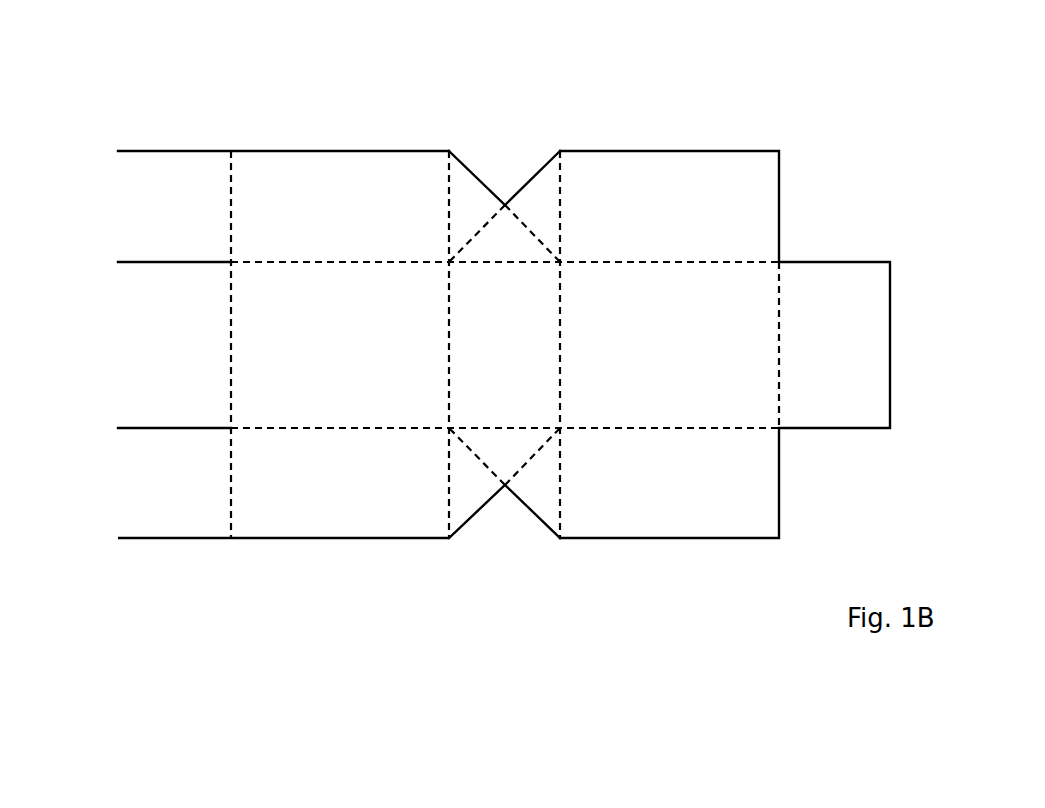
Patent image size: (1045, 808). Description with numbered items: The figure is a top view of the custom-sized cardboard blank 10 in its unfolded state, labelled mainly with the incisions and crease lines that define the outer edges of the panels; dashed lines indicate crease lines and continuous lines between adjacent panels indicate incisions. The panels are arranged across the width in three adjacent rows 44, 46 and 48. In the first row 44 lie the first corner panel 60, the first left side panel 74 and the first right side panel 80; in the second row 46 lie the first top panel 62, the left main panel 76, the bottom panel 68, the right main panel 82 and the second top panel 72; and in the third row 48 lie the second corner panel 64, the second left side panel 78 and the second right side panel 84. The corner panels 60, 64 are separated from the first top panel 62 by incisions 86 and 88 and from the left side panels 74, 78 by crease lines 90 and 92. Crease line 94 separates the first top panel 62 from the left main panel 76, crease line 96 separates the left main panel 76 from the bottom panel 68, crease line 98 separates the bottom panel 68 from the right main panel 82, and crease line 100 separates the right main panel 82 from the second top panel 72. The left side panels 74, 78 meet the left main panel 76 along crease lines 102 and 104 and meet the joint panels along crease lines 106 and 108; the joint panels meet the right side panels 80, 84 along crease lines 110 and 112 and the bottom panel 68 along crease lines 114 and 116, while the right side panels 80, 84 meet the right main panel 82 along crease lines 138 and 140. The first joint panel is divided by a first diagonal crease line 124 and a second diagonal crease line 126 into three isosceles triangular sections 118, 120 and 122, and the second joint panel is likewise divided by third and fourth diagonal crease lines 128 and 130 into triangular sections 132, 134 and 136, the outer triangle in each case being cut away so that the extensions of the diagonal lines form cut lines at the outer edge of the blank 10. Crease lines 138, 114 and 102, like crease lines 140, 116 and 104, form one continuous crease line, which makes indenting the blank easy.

The custom-sized cardboard blank 10 is at (845, 85).
The first row 44 is at (101, 486).
The second row 46 is at (101, 352).
The third row 48 is at (101, 202).
The first corner panel 60 is at (184, 473).
The first top panel 62 is at (159, 357).
The second corner panel 64 is at (184, 233).
The bottom panel 68 is at (487, 357).
The second top panel 72 is at (822, 347).
The first left side panel 74 is at (359, 482).
The left main panel 76 is at (315, 379).
The second left side panel 78 is at (249, 233).
The first right side panel 80 is at (638, 477).
The right main panel 82 is at (647, 357).
The second right side panel 84 is at (673, 244).
The incision 86 is at (152, 532).
The incision 88 is at (174, 169).
The crease line 90 is at (211, 564).
The crease line 92 is at (240, 126).
The crease line 94 is at (277, 495).
The crease line 96 is at (390, 187).
The crease line 98 is at (693, 212).
The crease line 100 is at (836, 435).
The crease line 102 is at (353, 521).
The crease line 104 is at (311, 166).
The crease line 106 is at (407, 585).
The crease line 108 is at (394, 149).
The crease line 110 is at (643, 535).
The crease line 112 is at (666, 169).
The crease line 114 is at (549, 541).
The crease line 116 is at (526, 147).
The isosceles triangular section 118 is at (446, 581).
The isosceles triangular section 120 is at (497, 533).
The isosceles triangular section 122 is at (589, 589).
The first diagonal crease line 124 is at (485, 552).
The second diagonal crease line 126 is at (623, 549).
The third diagonal crease line 128 is at (474, 149).
The fourth diagonal crease line 130 is at (603, 133).
The isosceles triangular section 132 is at (424, 117).
The isosceles triangular section 134 is at (562, 134).
The isosceles triangular section 136 is at (631, 143).
The crease line 138 is at (732, 523).
The crease line 140 is at (803, 191).